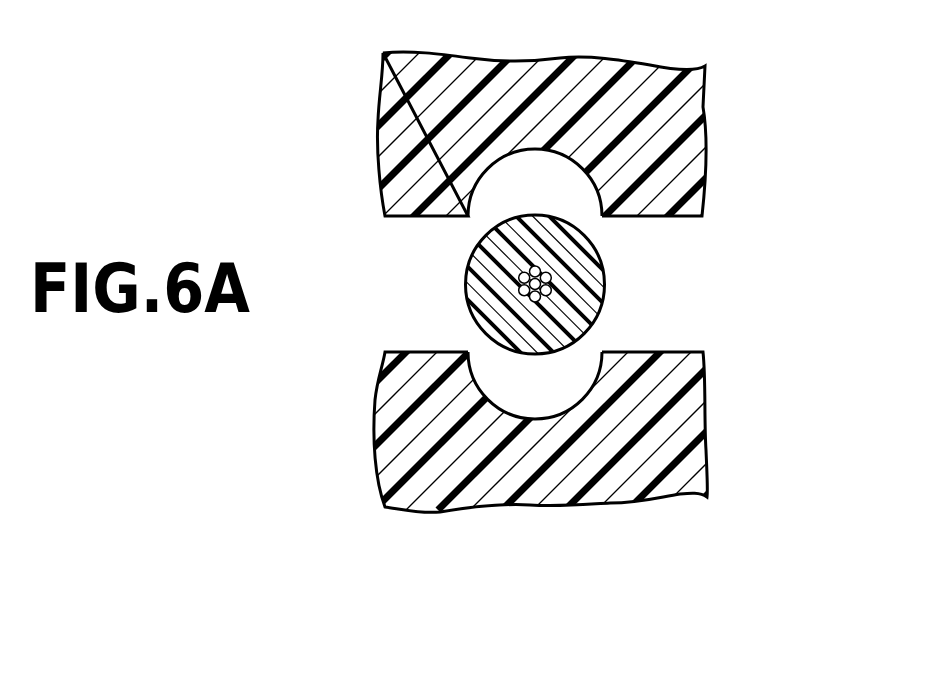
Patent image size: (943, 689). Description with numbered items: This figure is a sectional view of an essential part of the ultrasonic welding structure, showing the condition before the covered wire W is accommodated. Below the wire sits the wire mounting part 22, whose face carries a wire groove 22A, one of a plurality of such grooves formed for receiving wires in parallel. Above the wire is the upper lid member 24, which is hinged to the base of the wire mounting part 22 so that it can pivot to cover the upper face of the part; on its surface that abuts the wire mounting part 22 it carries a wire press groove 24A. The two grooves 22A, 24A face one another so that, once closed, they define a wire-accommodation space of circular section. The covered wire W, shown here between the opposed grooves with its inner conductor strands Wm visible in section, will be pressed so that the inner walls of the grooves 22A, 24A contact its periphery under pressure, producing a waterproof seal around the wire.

The wire mounting part 22 is at (534, 465).
The wire grooves 22A is at (517, 420).
The upper lid member 24 is at (544, 109).
The wire press grooves 24A is at (516, 148).
The covered wire W is at (596, 276).
The core strands of wire Wm is at (596, 308).